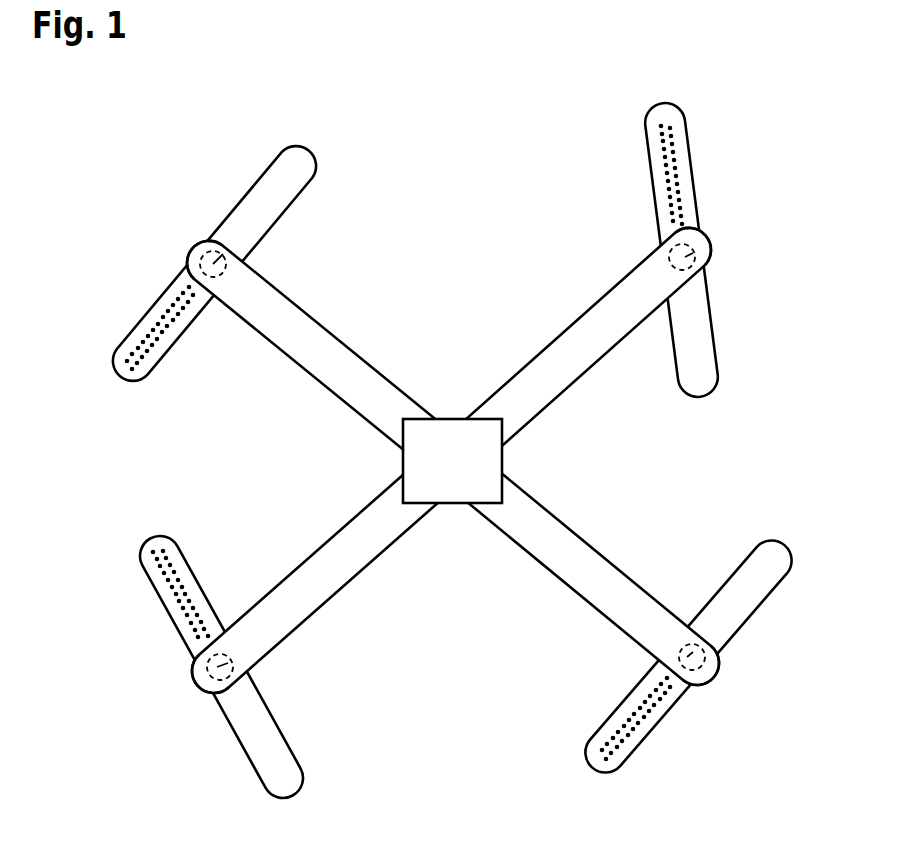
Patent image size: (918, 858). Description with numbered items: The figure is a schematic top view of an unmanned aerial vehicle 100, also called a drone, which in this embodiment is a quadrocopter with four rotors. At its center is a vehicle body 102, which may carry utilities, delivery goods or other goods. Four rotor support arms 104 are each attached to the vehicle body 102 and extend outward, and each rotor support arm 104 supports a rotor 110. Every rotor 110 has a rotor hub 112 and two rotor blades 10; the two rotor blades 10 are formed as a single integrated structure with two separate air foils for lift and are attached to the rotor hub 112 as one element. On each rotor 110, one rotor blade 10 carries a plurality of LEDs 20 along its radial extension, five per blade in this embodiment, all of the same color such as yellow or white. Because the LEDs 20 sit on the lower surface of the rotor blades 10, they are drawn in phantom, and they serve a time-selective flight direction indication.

The unmanned aerial vehicle 100 is at (106, 218).
The rotor blade 10 is at (297, 168).
The LEDs 20 is at (162, 337).
The vehicle body 102 is at (475, 475).
The rotor support arm 104 is at (348, 360).
The rotor 110 is at (196, 222).
The rotor hub 112 is at (226, 252).